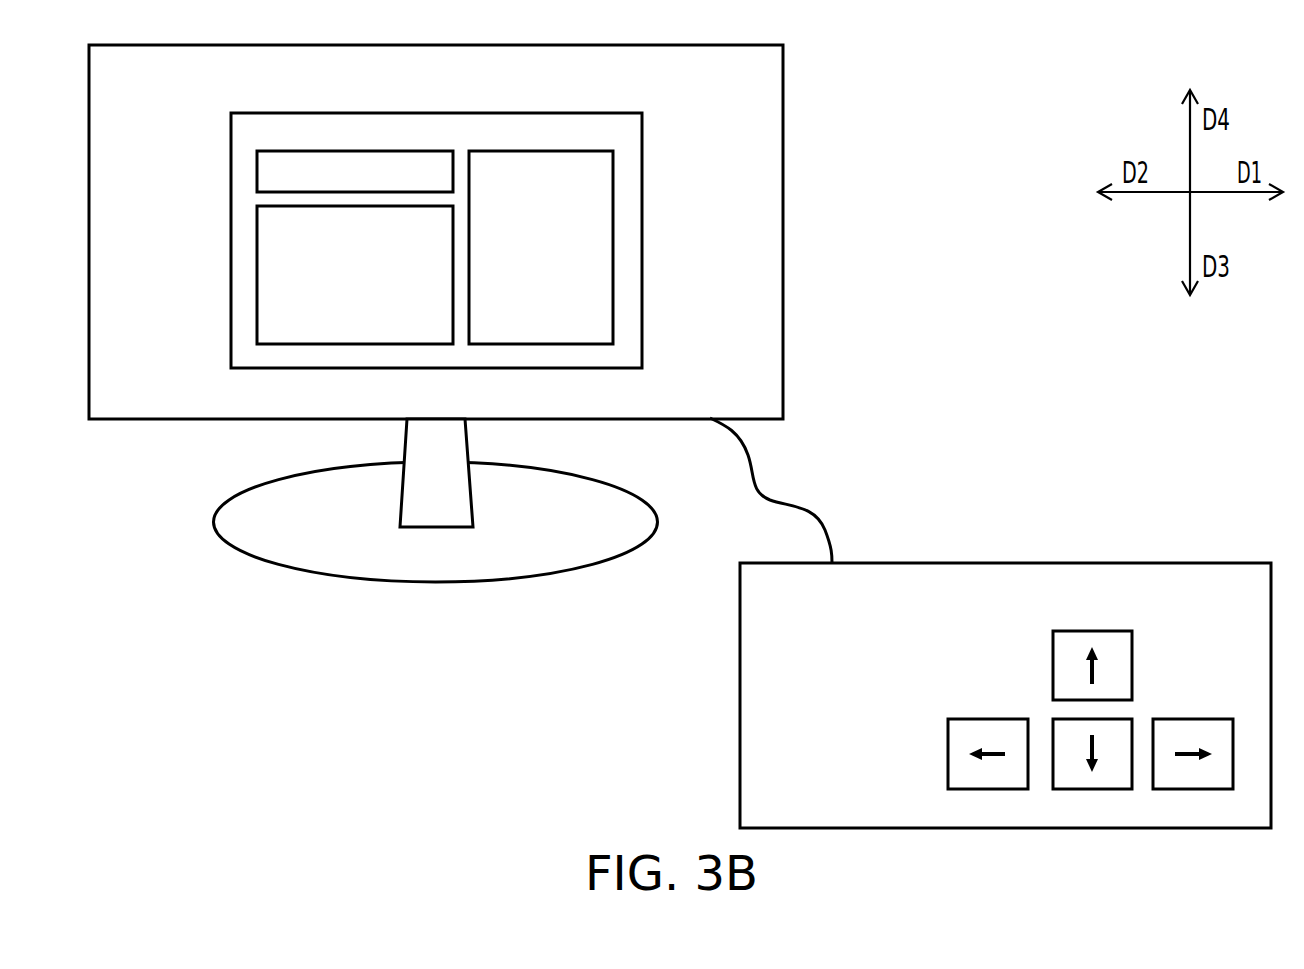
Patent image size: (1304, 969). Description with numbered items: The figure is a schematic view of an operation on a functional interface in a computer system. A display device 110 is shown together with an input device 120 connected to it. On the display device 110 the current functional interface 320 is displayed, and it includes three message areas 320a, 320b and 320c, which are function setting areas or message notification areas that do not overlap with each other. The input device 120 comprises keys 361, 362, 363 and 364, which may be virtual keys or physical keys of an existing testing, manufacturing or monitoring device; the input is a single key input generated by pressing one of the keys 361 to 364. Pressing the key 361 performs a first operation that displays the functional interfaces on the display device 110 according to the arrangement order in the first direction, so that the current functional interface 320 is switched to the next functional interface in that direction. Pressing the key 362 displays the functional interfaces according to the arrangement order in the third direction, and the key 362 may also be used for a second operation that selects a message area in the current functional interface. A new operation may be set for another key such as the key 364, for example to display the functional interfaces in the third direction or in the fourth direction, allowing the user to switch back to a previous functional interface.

The display device 110 is at (783, 130).
The input device 120 is at (1132, 563).
The functional interface 320 is at (438, 113).
The message area 320a is at (357, 151).
The message area 320b is at (257, 275).
The message area 320c is at (542, 151).
The key 361 is at (1193, 719).
The key 362 is at (1092, 789).
The key 363 is at (973, 719).
The key 364 is at (1093, 631).